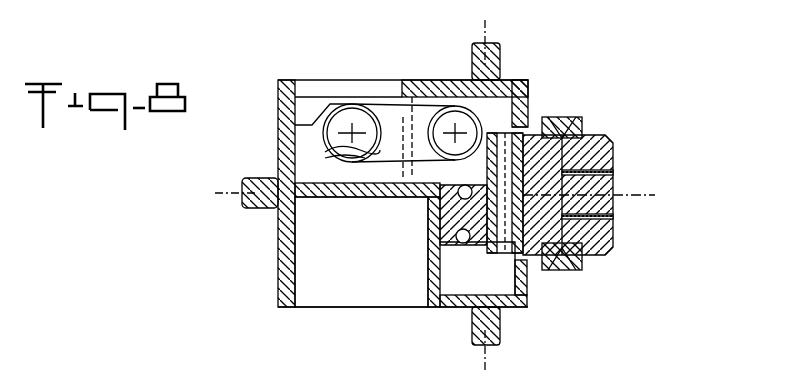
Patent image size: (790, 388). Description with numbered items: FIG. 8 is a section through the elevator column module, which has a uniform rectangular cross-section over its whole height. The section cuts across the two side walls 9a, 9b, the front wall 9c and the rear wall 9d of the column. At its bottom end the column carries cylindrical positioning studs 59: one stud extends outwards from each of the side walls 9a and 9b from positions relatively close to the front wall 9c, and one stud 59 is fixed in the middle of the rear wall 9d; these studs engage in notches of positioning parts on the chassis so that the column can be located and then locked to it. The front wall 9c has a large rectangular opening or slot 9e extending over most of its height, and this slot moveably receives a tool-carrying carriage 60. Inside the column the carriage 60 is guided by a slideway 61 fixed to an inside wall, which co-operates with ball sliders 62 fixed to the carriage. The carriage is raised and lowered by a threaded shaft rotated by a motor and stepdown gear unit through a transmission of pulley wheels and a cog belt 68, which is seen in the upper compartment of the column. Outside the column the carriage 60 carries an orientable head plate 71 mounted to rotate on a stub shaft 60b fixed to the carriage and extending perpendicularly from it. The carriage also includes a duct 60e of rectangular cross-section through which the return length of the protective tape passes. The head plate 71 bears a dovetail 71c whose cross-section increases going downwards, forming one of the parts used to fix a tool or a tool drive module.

The side wall 9a is at (358, 80).
The side wall 9b is at (355, 308).
The front wall 9c is at (530, 292).
The rear wall 9d is at (278, 156).
The rectangular opening or slot 9e is at (527, 272).
The cylindrical positioning stud 59 is at (490, 52).
The tool-carrying carriage 60 is at (562, 117).
The stub shaft 60b is at (613, 197).
The duct 60e is at (613, 235).
The slideway 61 is at (441, 212).
The ball slider 62 is at (470, 248).
The cog belt 68 is at (388, 138).
The orientable head plate 71 is at (612, 157).
The dovetail 71c is at (612, 137).